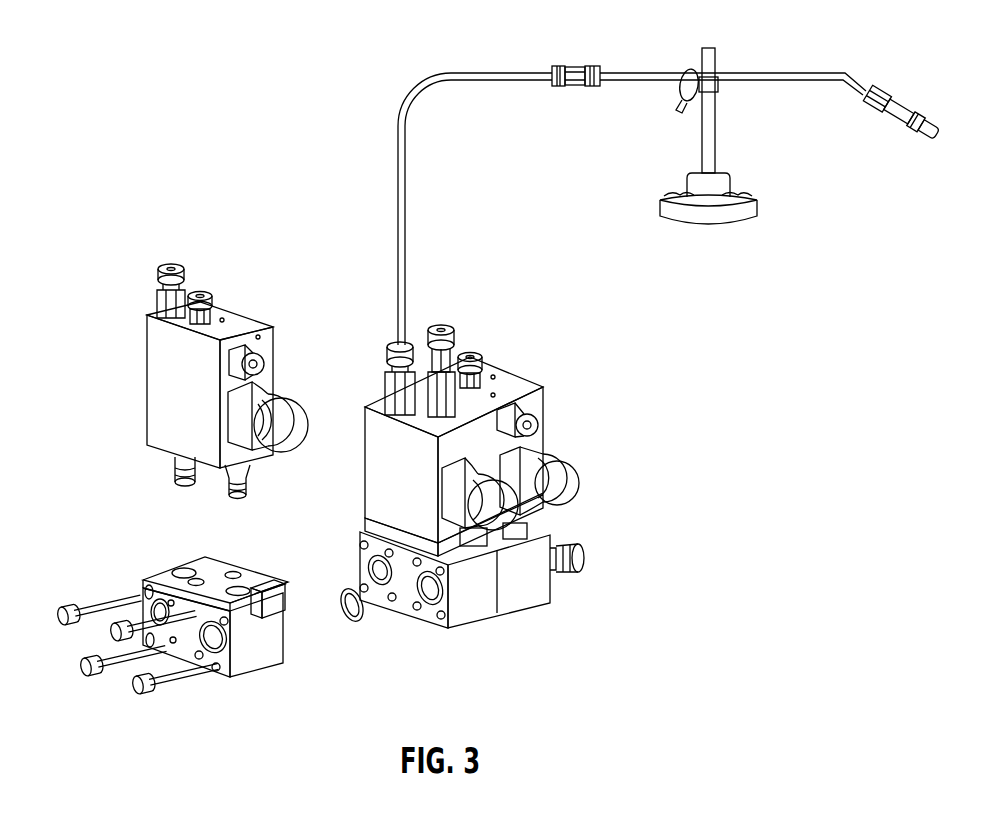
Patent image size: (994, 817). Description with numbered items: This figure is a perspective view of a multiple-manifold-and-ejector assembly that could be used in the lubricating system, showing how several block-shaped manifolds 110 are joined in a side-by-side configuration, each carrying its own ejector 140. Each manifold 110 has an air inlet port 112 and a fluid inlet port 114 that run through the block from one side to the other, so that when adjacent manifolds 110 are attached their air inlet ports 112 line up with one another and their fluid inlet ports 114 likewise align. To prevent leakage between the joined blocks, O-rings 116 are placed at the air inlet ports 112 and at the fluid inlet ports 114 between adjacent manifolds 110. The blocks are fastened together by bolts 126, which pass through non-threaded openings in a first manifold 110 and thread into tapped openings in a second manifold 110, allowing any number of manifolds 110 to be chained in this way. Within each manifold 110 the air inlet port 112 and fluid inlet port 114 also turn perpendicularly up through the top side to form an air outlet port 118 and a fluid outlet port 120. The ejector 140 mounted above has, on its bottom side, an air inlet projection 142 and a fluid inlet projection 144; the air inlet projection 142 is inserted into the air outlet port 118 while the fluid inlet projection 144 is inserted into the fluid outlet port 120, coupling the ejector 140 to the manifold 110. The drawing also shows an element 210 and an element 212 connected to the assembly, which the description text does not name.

The manifold 110 is at (275, 681).
The air inlet port 112 is at (143, 604).
The fluid inlet port 114 is at (216, 671).
The O-ring 116 is at (346, 617).
The air outlet port 118 is at (192, 560).
The fluid outlet port 120 is at (260, 582).
The bolt 126 is at (98, 641).
The ejector 140 is at (273, 380).
The air inlet projection 142 is at (174, 473).
The fluid inlet projection 144 is at (227, 488).
The nozzle 210 is at (886, 108).
The tube 212 is at (522, 72).